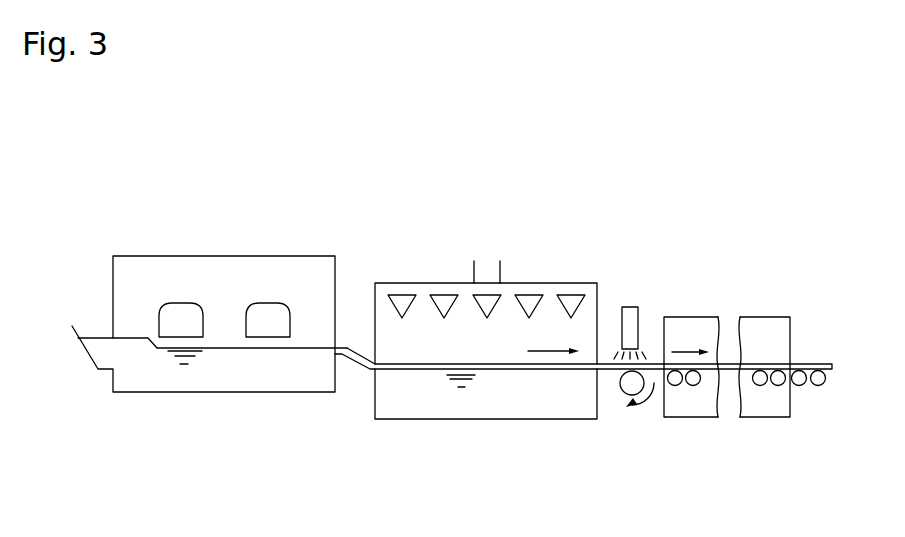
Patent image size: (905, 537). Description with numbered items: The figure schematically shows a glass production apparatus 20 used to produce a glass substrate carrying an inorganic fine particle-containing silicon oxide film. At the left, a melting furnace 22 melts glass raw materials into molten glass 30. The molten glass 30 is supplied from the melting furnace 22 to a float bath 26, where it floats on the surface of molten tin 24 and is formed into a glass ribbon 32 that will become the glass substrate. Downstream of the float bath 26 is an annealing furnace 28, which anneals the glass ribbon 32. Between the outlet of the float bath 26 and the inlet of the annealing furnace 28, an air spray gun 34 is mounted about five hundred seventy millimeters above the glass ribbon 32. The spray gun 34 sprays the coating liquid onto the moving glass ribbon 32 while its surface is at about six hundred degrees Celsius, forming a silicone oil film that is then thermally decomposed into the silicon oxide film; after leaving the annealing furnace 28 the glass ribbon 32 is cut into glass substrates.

The glass production apparatus 20 is at (424, 209).
The melting furnace 22 is at (250, 256).
The molten tin 24 is at (550, 412).
The float bath 26 is at (553, 283).
The annealing furnace 28 is at (697, 322).
The molten glass 30 is at (265, 377).
The glass ribbon 32 is at (587, 363).
The air spray gun 34 is at (634, 313).